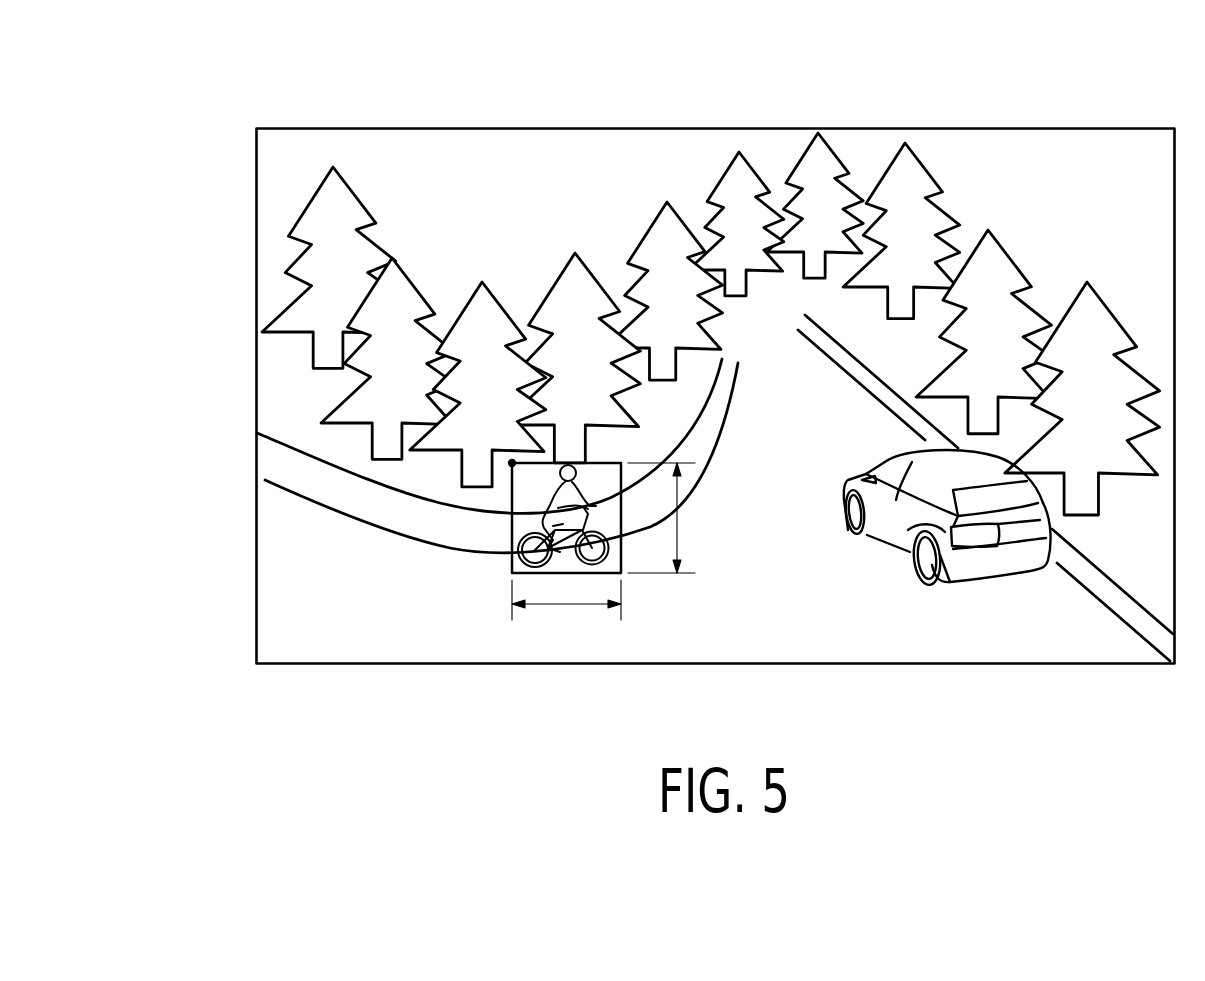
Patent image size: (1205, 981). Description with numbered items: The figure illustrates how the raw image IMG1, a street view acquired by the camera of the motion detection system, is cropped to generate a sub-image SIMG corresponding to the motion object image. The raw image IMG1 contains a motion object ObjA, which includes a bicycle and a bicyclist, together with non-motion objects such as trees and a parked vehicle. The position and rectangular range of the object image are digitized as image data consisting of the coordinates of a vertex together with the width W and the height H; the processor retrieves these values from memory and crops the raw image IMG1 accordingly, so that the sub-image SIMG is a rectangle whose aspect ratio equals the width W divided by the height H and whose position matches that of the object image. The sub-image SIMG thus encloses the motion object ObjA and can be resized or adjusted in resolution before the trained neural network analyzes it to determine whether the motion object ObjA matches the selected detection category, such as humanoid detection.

The raw image IMG1 is at (278, 128).
The motion object ObjA is at (540, 499).
The sub-image SIMG is at (513, 535).
The height H is at (665, 518).
The width W is at (566, 608).